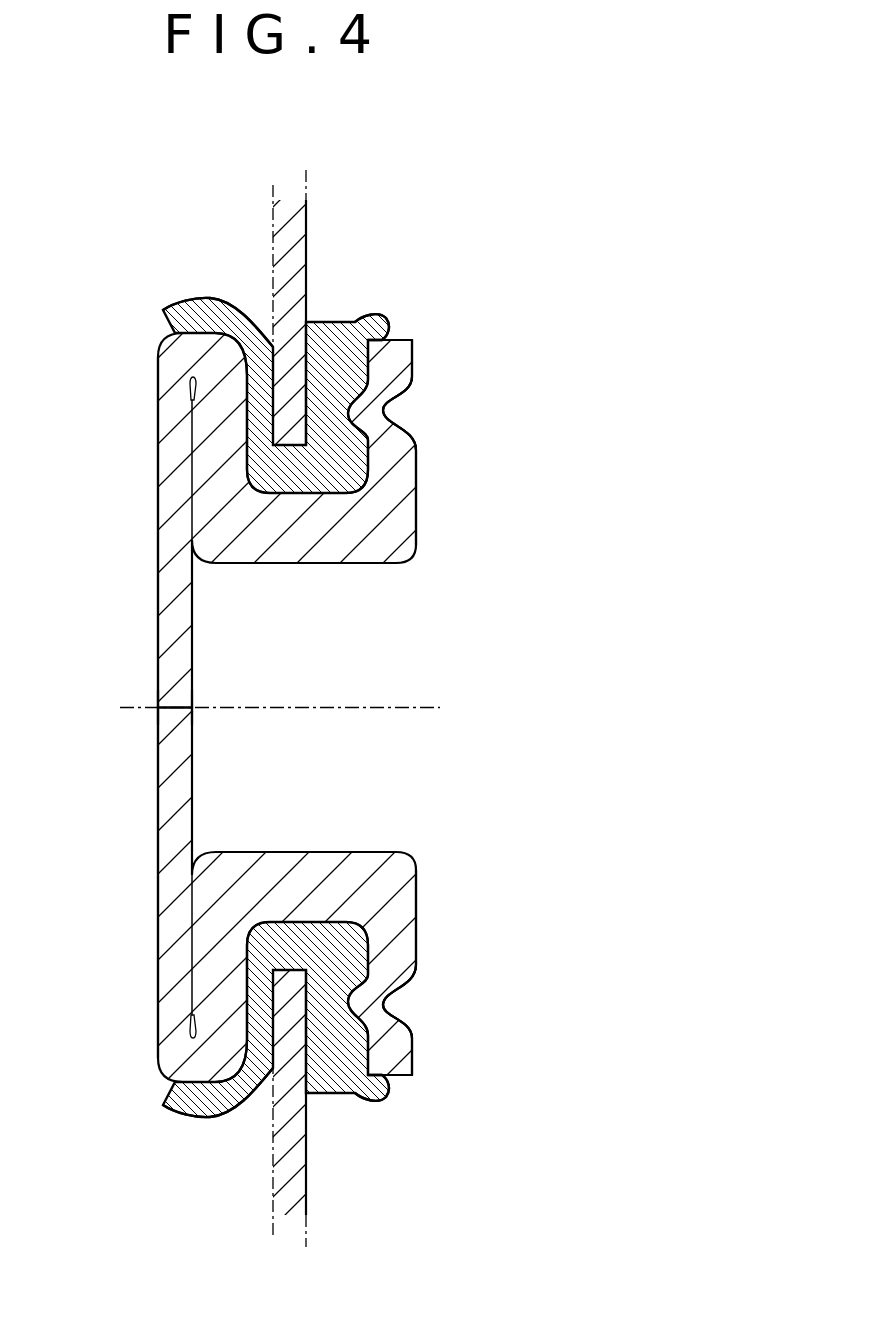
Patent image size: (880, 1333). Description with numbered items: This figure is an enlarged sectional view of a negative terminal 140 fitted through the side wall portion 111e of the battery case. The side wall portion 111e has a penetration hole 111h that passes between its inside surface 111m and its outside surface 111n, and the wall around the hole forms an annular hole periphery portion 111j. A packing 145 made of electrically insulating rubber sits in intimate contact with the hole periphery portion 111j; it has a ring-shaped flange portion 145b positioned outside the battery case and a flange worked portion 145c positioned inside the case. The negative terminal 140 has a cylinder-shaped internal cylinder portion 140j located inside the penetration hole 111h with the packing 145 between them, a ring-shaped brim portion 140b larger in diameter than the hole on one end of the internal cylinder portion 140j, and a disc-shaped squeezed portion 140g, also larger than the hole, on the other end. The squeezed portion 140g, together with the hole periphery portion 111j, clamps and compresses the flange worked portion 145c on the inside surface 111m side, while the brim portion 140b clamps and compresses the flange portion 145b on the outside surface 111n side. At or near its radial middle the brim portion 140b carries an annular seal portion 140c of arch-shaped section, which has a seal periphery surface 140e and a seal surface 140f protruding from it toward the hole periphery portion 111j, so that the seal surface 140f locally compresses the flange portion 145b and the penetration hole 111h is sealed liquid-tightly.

The negative terminal 140 is at (165, 430).
The brim portion 140b is at (398, 470).
The seal portion 140c is at (372, 407).
The seal periphery surface 140e is at (382, 357).
The seal surface 140f is at (378, 397).
The squeezed portion 140g is at (165, 750).
The internal cylinder portion 140j is at (292, 860).
The side wall portion 111e is at (292, 231).
The penetration hole 111h is at (282, 450).
The hole periphery portion 111j is at (287, 422).
The inside surface 111m is at (285, 228).
The outside surface 111n is at (306, 258).
The packing 145 is at (332, 322).
The flange portion 145b is at (370, 317).
The flange worked portion 145c is at (215, 310).